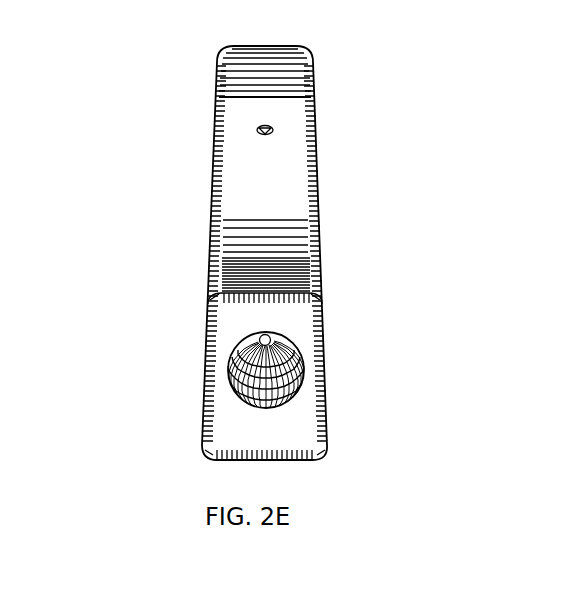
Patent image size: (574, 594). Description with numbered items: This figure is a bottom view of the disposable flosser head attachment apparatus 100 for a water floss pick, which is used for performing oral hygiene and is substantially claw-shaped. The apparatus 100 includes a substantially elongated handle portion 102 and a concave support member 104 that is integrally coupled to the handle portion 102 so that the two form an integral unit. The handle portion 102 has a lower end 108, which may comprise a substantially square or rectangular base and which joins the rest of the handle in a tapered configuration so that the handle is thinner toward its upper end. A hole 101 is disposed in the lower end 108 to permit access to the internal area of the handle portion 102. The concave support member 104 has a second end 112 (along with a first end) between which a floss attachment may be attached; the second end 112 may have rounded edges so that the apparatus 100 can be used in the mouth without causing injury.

The disposable flosser head attachment apparatus 100 is at (143, 209).
The hole 101 is at (230, 372).
The handle portion 102 is at (328, 361).
The concave support member 104 is at (322, 234).
The lower end 108 is at (315, 437).
The second end 112 is at (287, 111).